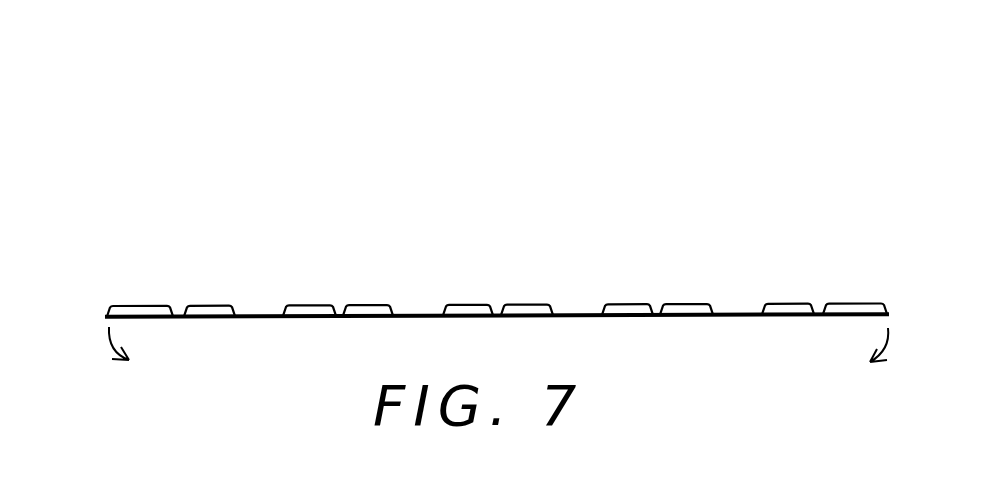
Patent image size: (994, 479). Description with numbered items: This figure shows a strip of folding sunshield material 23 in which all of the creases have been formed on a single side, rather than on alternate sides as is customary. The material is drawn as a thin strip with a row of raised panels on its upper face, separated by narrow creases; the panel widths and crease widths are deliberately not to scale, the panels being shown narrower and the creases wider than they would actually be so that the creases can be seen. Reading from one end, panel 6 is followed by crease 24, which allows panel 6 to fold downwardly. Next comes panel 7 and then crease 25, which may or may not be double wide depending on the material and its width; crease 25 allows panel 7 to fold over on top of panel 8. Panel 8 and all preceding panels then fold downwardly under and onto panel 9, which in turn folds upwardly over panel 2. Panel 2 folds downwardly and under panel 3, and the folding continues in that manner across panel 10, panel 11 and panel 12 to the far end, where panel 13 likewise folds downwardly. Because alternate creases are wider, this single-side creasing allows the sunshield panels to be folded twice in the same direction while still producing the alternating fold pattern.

The folding sunshield material 23 is at (402, 167).
The panel 6 is at (143, 303).
The crease 24 is at (178, 313).
The panel 7 is at (212, 303).
The crease 25 is at (257, 313).
The panel 8 is at (302, 305).
The panel 9 is at (368, 305).
The panel 2 is at (468, 305).
The panel 3 is at (520, 305).
The panel 10 is at (625, 302).
The panel 11 is at (683, 302).
The panel 12 is at (780, 302).
The panel 13 is at (853, 302).